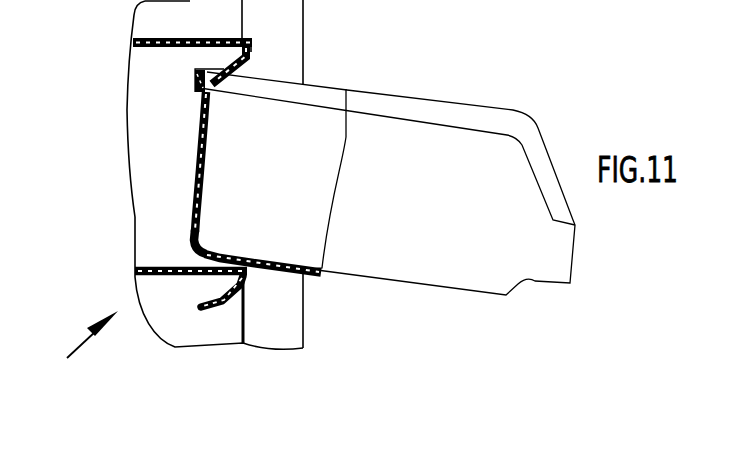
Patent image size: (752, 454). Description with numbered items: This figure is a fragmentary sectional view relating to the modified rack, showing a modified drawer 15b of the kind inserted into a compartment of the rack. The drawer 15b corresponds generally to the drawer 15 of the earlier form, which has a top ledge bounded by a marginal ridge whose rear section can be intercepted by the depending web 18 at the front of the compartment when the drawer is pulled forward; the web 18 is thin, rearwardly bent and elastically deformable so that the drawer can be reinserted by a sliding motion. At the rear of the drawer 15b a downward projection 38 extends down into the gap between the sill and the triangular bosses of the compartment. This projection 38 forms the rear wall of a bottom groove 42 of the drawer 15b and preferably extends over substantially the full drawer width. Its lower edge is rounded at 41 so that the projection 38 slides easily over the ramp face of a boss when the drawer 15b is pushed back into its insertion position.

The drawer 15 is at (198, 133).
The modified drawer 15b is at (452, 72).
The depending web 18 is at (200, 81).
The downward projection 38 is at (190, 241).
The rounded lower edge 41 is at (194, 259).
The bottom groove 42 is at (202, 247).